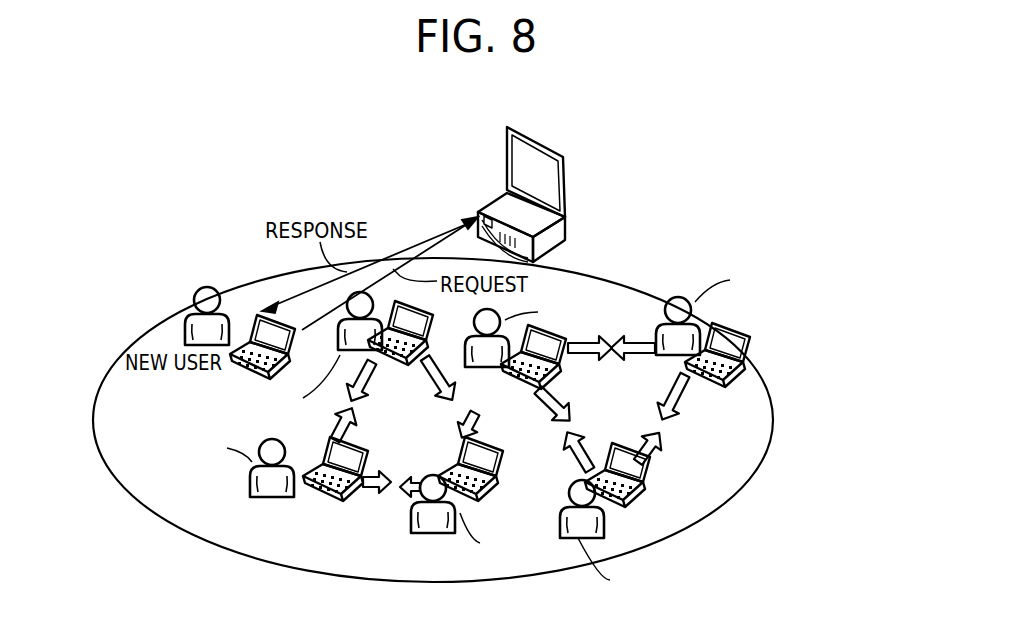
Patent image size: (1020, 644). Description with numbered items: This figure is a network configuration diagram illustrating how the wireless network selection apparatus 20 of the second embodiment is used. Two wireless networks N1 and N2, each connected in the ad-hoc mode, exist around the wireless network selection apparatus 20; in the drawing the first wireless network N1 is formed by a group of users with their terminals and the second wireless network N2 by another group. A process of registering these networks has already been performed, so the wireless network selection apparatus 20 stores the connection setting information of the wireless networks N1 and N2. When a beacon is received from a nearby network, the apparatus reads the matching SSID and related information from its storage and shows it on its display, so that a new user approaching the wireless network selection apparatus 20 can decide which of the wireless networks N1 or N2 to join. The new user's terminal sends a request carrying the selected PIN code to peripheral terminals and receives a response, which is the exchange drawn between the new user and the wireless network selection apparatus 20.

The wireless network selection apparatus 20 is at (548, 145).
The wireless network N1 is at (407, 423).
The wireless network N2 is at (608, 400).